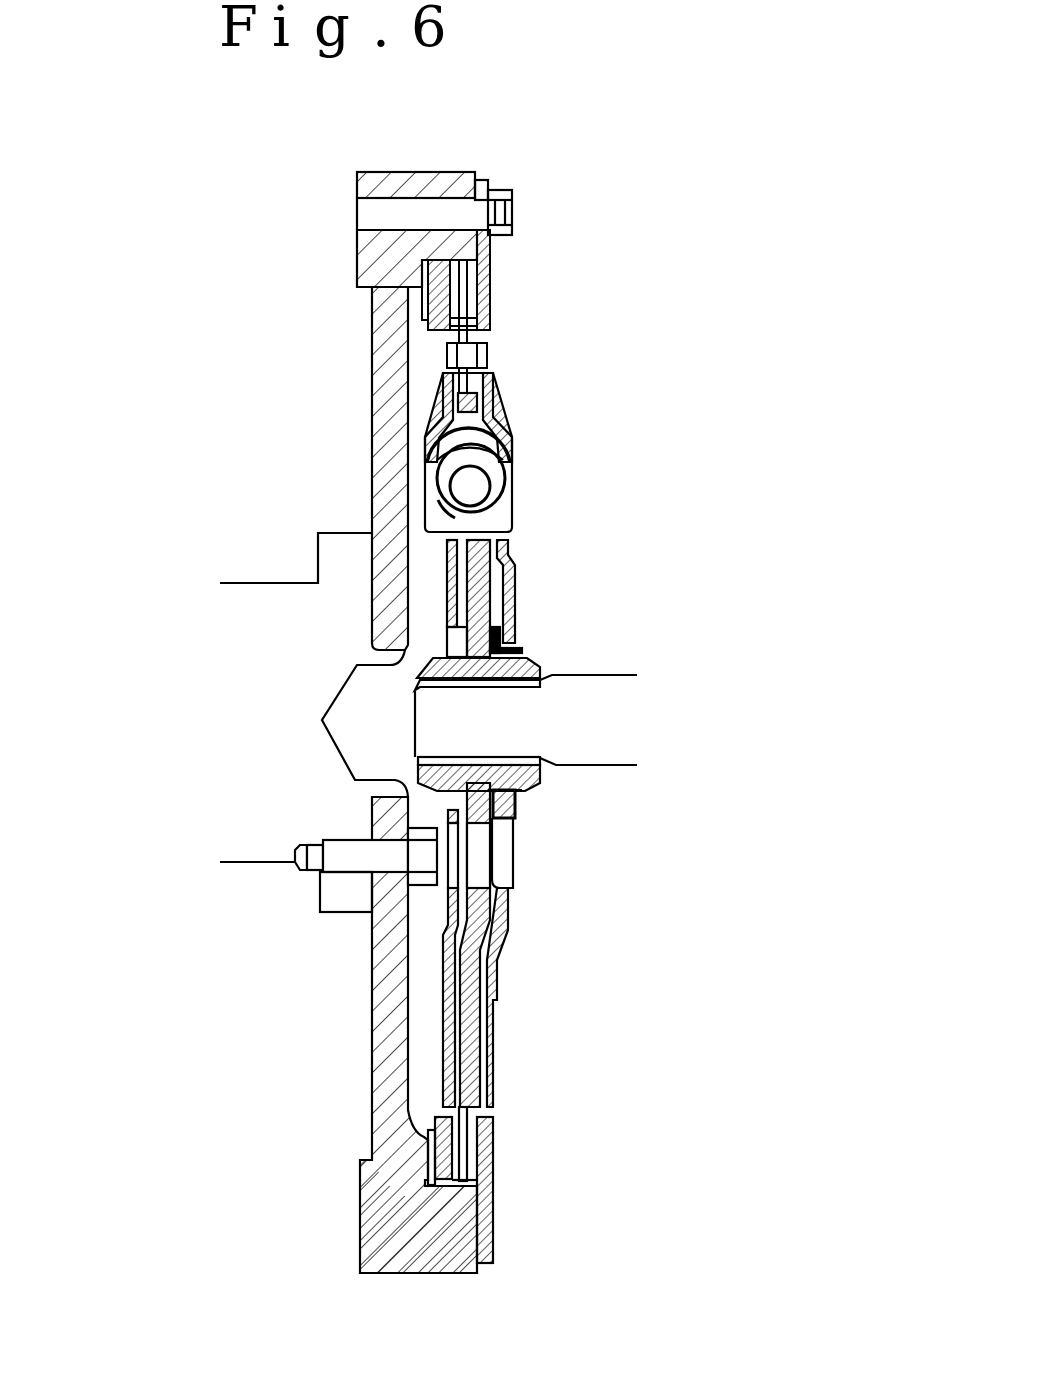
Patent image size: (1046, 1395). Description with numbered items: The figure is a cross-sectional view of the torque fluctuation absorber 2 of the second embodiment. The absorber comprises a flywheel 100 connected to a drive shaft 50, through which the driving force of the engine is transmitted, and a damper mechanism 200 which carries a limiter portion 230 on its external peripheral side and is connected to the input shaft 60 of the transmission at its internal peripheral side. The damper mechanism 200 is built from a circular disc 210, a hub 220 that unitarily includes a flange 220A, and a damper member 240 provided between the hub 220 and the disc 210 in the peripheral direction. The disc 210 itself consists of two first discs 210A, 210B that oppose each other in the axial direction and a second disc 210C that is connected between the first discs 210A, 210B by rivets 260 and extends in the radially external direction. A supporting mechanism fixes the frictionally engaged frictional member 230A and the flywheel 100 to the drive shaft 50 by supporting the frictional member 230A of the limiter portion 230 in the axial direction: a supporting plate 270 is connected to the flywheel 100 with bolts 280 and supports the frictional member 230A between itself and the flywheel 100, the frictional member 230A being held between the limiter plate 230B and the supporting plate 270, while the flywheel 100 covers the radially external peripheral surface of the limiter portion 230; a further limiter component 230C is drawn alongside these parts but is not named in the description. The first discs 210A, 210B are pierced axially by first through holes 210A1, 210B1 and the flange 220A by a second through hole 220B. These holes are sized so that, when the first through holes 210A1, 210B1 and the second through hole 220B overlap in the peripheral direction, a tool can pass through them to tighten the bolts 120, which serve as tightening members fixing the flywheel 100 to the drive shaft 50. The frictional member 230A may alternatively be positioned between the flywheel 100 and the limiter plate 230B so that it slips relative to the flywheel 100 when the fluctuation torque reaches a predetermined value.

The torque fluctuation absorber 2 is at (682, 217).
The drive shaft 50 is at (293, 600).
The input shaft 60 is at (605, 698).
The flywheel 100 is at (375, 435).
The bolts 120 is at (427, 858).
The damper mechanism 200 is at (454, 505).
The circular disc 210 is at (451, 443).
The first disc 210A is at (497, 414).
The first through hole 210A1 is at (513, 841).
The first disc 210B is at (452, 396).
The first through hole 210B1 is at (447, 840).
The second disc 210C is at (488, 316).
The hub 220 is at (529, 843).
The flange 220A is at (488, 984).
The second through hole 220B is at (486, 860).
The limiter portion 230 is at (451, 281).
The frictional member 230A is at (489, 275).
The limiter plate 230B is at (424, 267).
The rolling element 230C is at (440, 305).
The damper member 240 is at (496, 508).
The rivets 260 is at (488, 356).
The supporting plate 270 is at (487, 183).
The bolts 280 is at (500, 210).